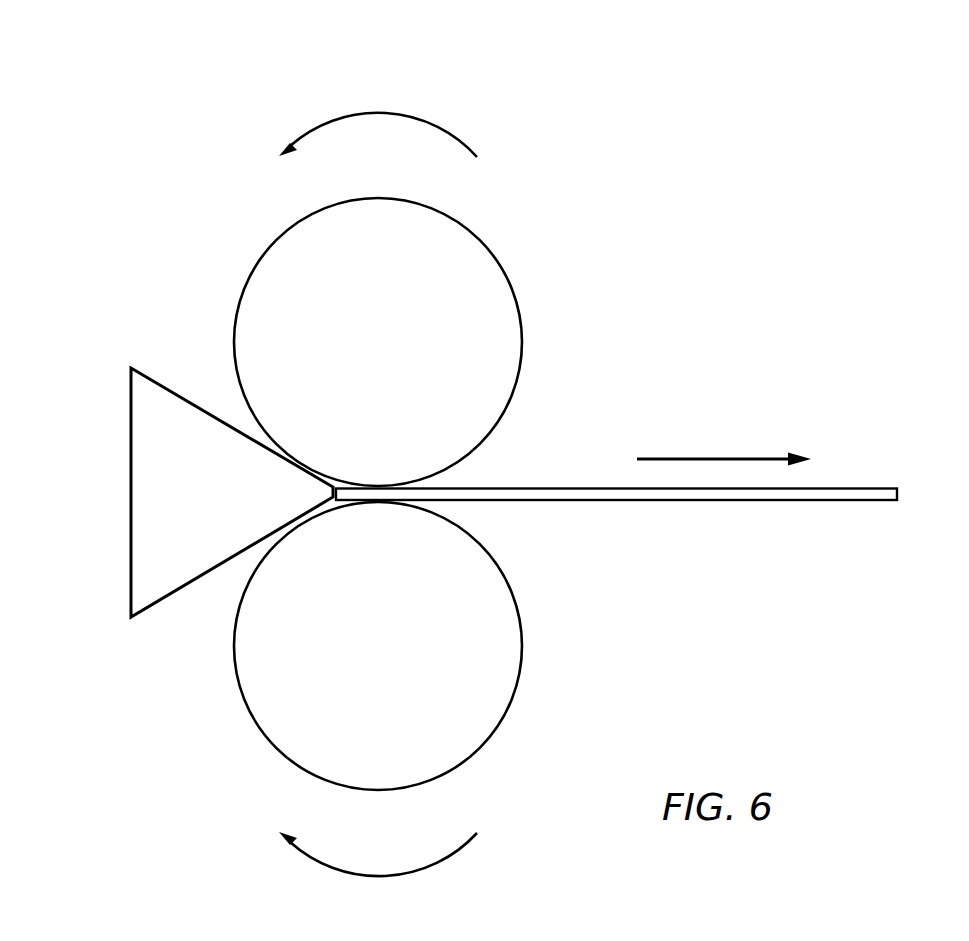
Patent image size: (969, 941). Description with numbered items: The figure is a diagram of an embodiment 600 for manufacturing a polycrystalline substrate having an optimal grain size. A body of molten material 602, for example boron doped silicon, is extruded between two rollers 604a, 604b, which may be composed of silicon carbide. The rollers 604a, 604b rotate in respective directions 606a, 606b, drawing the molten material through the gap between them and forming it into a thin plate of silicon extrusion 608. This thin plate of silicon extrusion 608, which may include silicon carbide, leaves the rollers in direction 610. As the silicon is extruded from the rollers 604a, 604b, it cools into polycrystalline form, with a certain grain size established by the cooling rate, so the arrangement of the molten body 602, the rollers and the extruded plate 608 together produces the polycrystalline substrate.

The embodiment for manufacturing a polycrystalline substrate 600 is at (650, 111).
The body of molten material 602 is at (163, 515).
The roller 604a is at (378, 342).
The roller 604b is at (378, 646).
The direction of rotation 606a is at (378, 113).
The direction of rotation 606b is at (395, 863).
The thin plate of silicon extrusion 608 is at (642, 495).
The direction of extrusion 610 is at (724, 442).